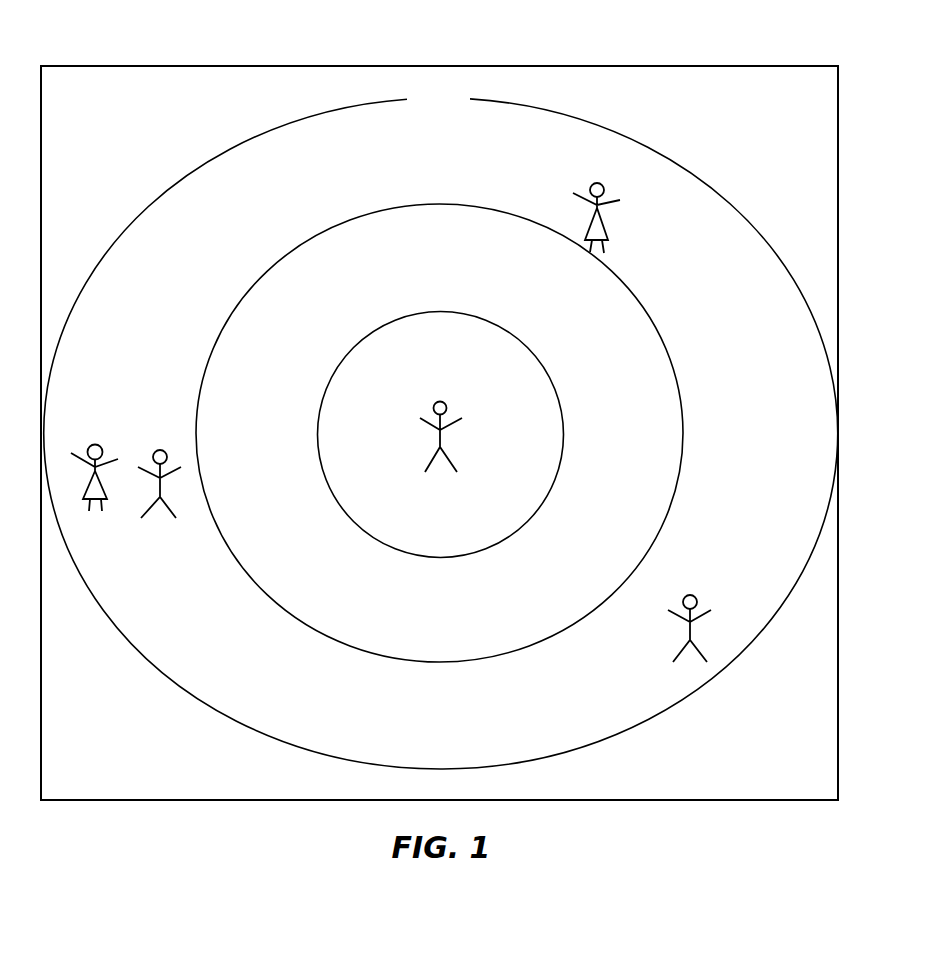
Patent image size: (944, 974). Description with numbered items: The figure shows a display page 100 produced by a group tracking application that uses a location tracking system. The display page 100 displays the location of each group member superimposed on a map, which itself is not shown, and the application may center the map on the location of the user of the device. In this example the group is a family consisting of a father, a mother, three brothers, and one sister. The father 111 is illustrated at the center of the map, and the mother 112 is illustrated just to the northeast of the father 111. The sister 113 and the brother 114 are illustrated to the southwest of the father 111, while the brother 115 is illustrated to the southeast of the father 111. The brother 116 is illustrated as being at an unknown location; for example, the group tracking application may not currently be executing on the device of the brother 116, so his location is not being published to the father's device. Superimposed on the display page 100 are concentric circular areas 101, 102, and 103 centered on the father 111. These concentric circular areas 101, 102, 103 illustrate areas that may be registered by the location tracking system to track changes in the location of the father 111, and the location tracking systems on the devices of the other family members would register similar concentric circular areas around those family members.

The display page 100 is at (439, 424).
The concentric circular area 101 is at (535, 356).
The concentric circular area 102 is at (674, 363).
The concentric circular area 103 is at (713, 189).
The father 111 is at (441, 434).
The mother 112 is at (604, 206).
The sister 113 is at (94, 478).
The brother 114 is at (159, 483).
The brother 115 is at (689, 628).
The brother 116 is at (440, 742).